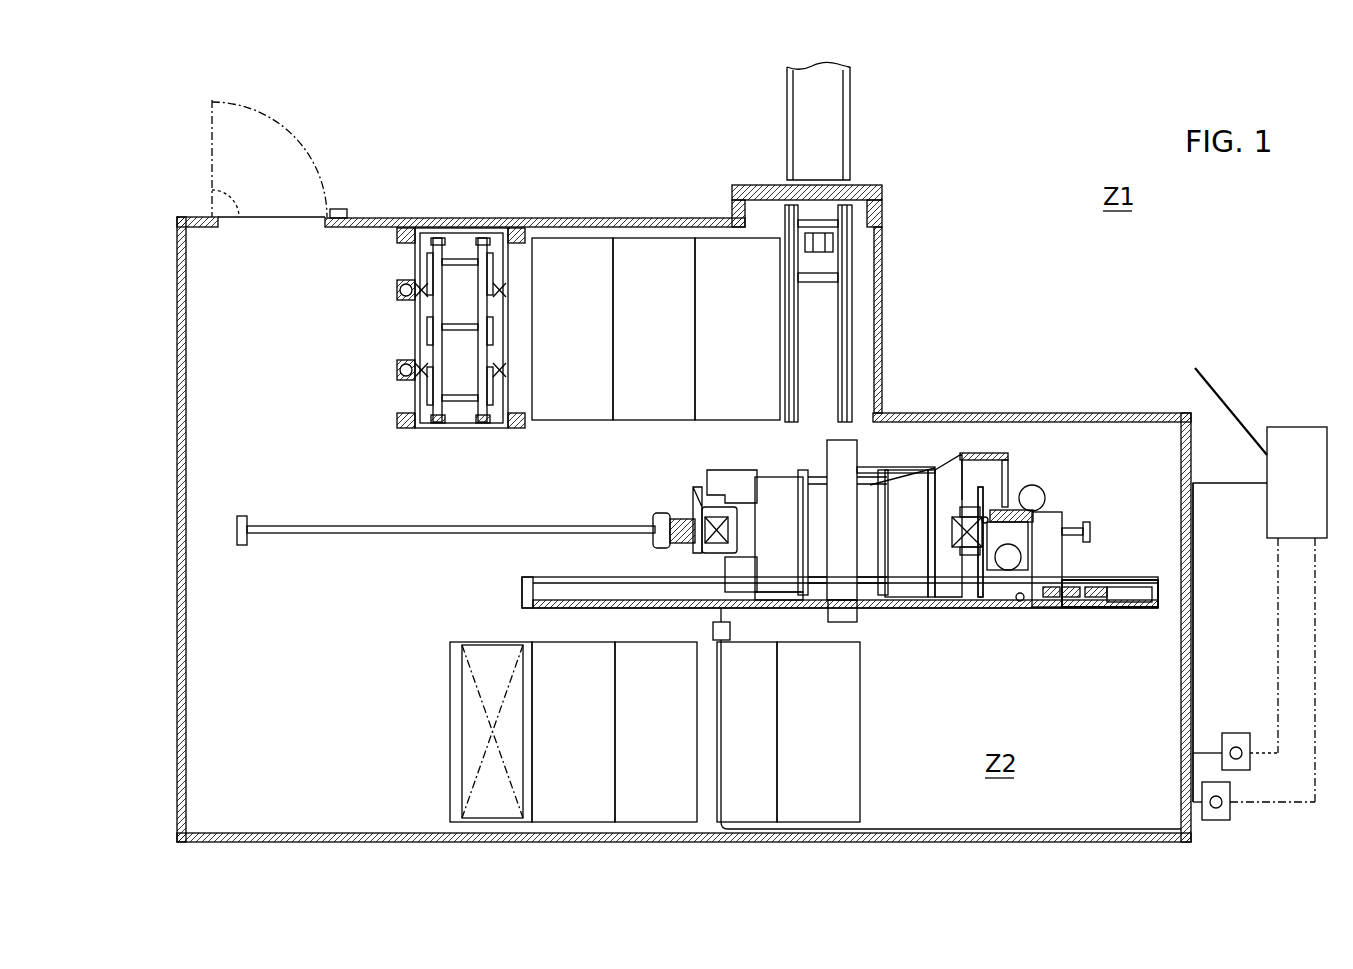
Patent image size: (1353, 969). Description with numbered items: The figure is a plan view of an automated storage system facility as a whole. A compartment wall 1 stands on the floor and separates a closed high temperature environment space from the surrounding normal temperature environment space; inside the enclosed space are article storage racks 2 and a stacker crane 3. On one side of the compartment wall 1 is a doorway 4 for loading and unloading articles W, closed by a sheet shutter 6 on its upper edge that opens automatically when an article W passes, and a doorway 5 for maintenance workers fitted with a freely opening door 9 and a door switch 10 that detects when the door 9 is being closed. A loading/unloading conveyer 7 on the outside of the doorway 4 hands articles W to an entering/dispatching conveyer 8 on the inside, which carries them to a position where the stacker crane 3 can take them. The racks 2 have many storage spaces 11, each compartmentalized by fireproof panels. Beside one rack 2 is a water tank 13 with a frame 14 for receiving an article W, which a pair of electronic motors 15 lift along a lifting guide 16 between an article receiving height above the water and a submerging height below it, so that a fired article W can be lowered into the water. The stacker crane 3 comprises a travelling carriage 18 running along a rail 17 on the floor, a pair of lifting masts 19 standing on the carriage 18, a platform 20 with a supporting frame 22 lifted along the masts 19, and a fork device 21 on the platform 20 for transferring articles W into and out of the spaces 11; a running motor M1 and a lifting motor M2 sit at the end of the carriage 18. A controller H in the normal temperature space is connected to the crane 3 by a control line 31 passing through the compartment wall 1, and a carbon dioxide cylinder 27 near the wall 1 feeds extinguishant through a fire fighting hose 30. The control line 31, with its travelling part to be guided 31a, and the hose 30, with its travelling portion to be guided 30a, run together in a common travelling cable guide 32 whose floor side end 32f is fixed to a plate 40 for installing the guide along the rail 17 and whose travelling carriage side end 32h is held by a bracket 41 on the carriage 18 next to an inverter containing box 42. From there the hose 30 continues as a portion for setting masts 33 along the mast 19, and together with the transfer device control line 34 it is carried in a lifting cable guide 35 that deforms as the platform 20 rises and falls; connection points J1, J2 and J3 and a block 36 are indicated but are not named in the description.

The compartment wall 1 is at (620, 218).
The article storage rack 2 is at (587, 432).
The stacker crane 3 is at (925, 648).
The doorway 4 is at (772, 180).
The doorway for workers 5 is at (275, 210).
The sheet shutter 6 is at (852, 188).
The loading/unloading conveyer 7 is at (830, 100).
The entering/dispatching conveyer 8 is at (855, 292).
The door 9 is at (212, 200).
The door switch 10 is at (340, 209).
The storage space 11 is at (588, 324).
The water tank 13 is at (455, 435).
The frame for receiving an article 14 is at (490, 415).
The electronic motors 15 is at (397, 290).
The lifting guide 16 is at (425, 283).
The rail 17 is at (313, 537).
The travelling carriage 18 is at (685, 545).
The lifting masts 19 is at (730, 530).
The platform 20 is at (722, 465).
The fork device 21 is at (832, 445).
The supporting frame 22 is at (785, 477).
The carbon dioxide cylinder 27 is at (1235, 812).
The fire fighting hose 30 is at (1200, 745).
The control line 31 is at (1193, 610).
The travelling portion to be guided 30a is at (1110, 593).
The travelling part to be guided 31a is at (1110, 593).
The travelling cable guide 32 is at (1100, 607).
The floor side end 32f is at (765, 607).
The travelling carriage side end 32h is at (1060, 605).
The portion for setting masts 33 is at (1053, 452).
The transfer device control line 34 is at (980, 542).
The lifting cable guide 35 is at (1000, 455).
The chuck block 36 is at (920, 468).
The plate for installing a guide 40 is at (560, 578).
The bracket for attaching a cable guide 41 is at (1040, 605).
The inverter containing box 42 is at (1060, 525).
The junction 1 J1 is at (713, 632).
The junction 2 J2 is at (1010, 600).
The junction 3 J3 is at (985, 518).
The running motor M1 is at (1040, 495).
The lifting motor M2 is at (1025, 555).
The article W is at (470, 752).
The controller H is at (1300, 427).